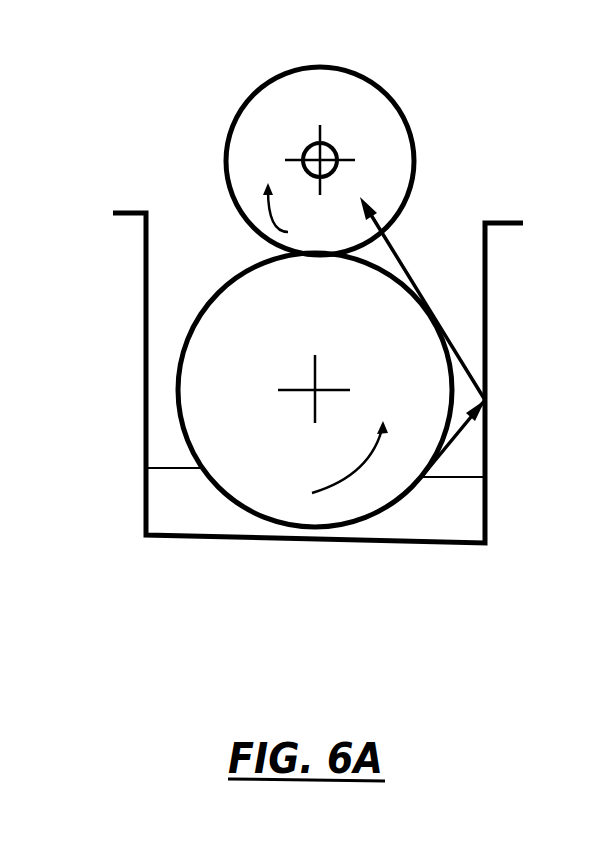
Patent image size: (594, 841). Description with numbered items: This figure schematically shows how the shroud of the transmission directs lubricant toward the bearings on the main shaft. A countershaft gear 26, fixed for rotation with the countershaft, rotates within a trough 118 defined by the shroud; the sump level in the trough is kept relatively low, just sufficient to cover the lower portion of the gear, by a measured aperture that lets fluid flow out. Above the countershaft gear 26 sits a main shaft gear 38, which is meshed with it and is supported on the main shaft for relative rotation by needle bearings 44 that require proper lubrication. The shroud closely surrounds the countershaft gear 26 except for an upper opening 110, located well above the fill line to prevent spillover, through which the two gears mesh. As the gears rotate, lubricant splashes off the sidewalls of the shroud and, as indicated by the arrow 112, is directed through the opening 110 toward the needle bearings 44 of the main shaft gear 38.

The countershaft gear 26 is at (280, 457).
The main shaft gear 38 is at (353, 152).
The needle bearings 44 is at (307, 147).
The upper opening 110 is at (198, 217).
The arrow (splashed lubricant) 112 is at (435, 290).
The trough 118 is at (145, 387).